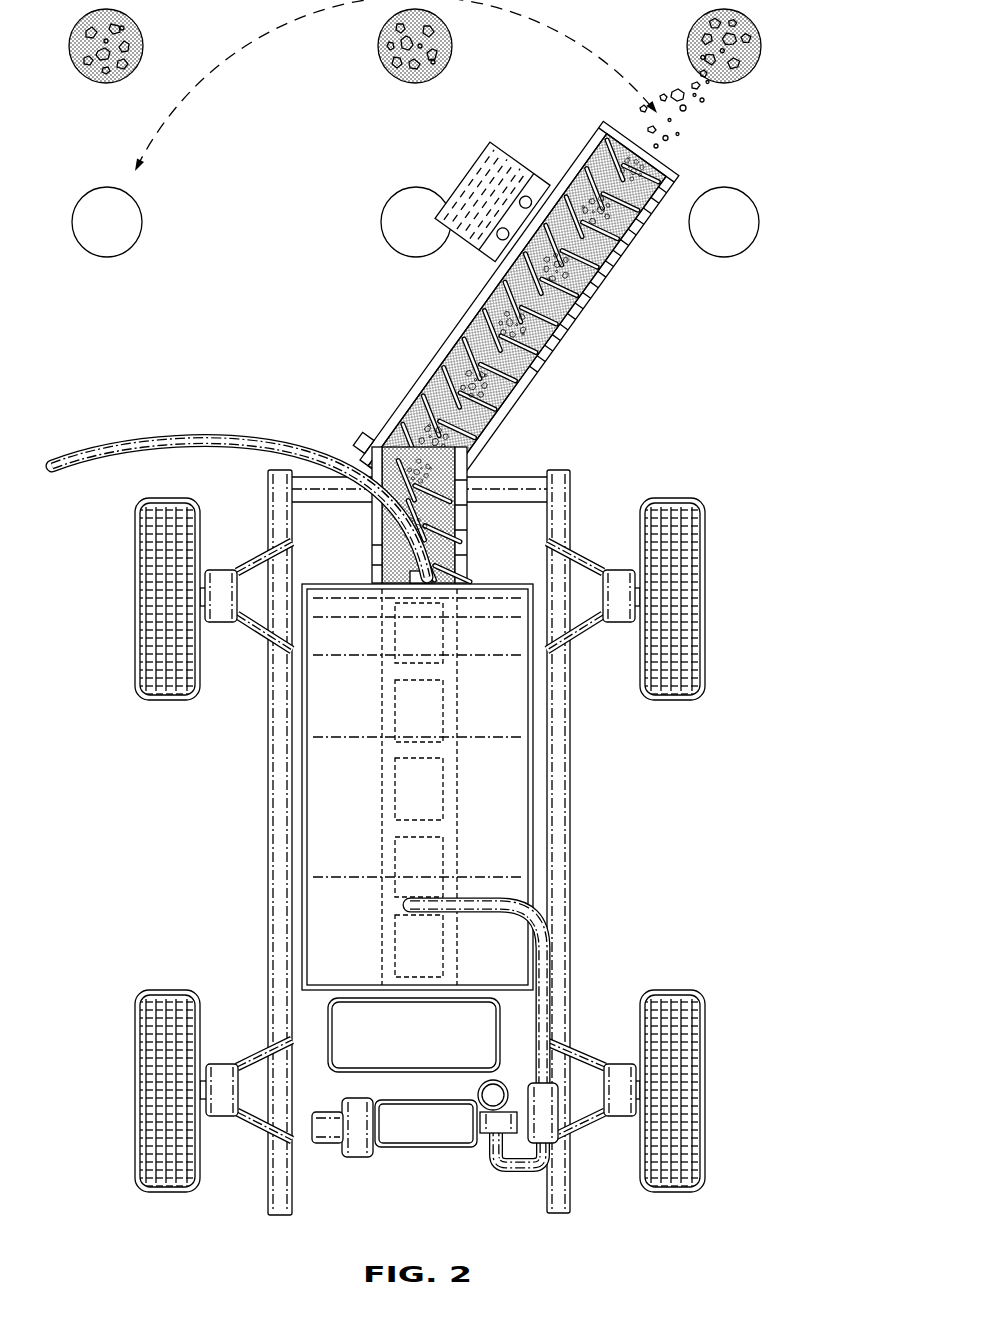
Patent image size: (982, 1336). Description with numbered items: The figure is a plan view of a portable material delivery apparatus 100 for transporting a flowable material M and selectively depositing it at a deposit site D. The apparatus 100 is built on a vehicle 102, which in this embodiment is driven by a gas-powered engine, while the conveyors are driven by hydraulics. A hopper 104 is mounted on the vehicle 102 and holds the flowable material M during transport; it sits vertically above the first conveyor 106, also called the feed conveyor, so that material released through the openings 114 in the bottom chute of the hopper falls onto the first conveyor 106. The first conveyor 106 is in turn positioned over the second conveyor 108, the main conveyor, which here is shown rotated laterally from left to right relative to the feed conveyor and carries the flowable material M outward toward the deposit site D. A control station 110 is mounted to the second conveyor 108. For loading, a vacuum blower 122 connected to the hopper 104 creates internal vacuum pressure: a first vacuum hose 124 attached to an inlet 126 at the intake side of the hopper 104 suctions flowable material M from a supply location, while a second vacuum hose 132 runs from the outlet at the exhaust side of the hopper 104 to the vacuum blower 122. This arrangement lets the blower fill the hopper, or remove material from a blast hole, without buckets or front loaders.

The portable material delivery apparatus 100 is at (266, 297).
The vehicle 102 is at (262, 906).
The hopper 104 is at (297, 807).
The first conveyor 106 is at (477, 530).
The second conveyor 108 is at (580, 346).
The control station 110 is at (451, 177).
The openings 114 is at (422, 797).
The vacuum blower 122 is at (556, 1146).
The first vacuum hose 124 is at (72, 476).
The inlet 126 is at (387, 565).
The second vacuum hose 132 is at (548, 987).
The deposit site D is at (757, 66).
The flowable material M is at (684, 110).